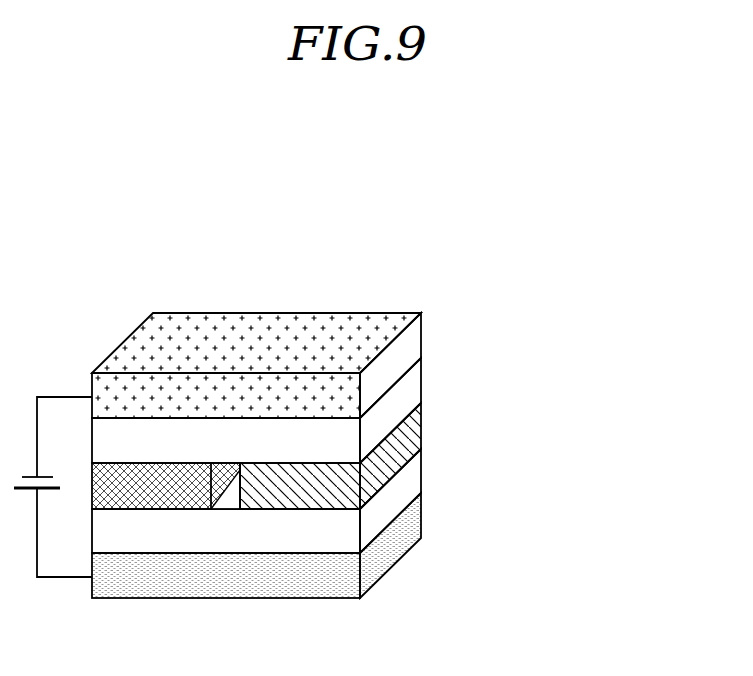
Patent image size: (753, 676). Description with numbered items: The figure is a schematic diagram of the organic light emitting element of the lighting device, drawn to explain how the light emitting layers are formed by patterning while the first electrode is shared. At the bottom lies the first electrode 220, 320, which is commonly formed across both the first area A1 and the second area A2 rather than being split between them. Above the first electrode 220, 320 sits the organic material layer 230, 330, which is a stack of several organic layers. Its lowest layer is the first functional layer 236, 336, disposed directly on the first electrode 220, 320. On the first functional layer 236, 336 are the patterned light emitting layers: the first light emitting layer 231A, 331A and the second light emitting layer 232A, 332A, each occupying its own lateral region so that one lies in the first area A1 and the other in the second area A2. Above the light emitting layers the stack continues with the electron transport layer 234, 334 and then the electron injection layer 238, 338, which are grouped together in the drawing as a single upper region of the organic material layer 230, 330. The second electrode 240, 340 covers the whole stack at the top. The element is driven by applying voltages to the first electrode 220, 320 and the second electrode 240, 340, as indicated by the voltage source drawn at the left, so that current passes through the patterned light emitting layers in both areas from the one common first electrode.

The second electrode 240 is at (309, 365).
The second electrode 340 is at (412, 345).
The electron transport layer 234 is at (347, 410).
The second electron transport layer 334 is at (347, 410).
The electron injection layer 238 is at (347, 410).
The electron injection layer 338 is at (412, 388).
The second light emitting layer 232A is at (321, 465).
The light emitting layer 332A is at (198, 487).
The first light emitting layer 231A is at (395, 456).
The light emitting layer 331A is at (388, 469).
The first functional layer 236 is at (309, 501).
The first functional layer 336 is at (392, 501).
The organic material layer 230 is at (658, 446).
The organic material layer 330 is at (612, 386).
The first electrode 220 is at (274, 558).
The first electrode 320 is at (397, 548).
The first area A1 is at (212, 608).
The second area A2 is at (361, 608).